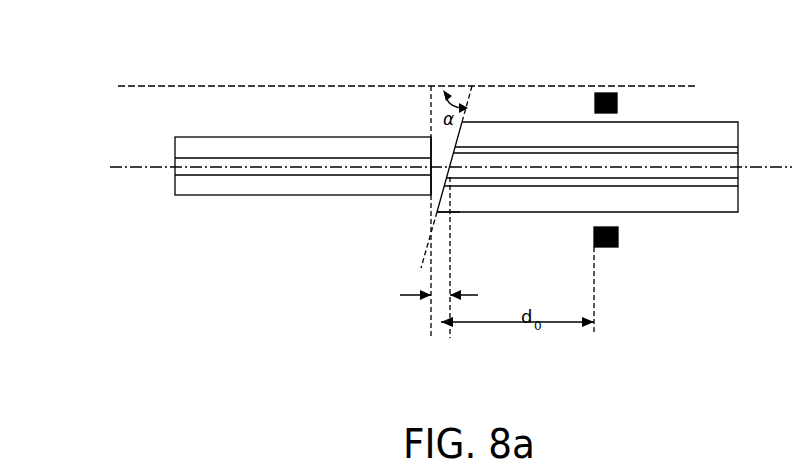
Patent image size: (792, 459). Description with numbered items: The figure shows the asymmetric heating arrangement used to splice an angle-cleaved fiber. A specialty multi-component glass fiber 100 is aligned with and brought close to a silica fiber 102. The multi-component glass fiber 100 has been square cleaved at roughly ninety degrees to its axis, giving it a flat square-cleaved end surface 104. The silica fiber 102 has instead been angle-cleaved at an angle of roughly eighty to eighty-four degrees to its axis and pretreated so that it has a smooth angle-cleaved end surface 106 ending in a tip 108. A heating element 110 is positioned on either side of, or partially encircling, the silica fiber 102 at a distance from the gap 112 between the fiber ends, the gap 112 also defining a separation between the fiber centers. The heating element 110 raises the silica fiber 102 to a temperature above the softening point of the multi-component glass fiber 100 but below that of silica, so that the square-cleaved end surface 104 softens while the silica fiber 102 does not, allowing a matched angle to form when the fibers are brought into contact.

The multi-component glass fiber 100 is at (245, 137).
The silica fiber 102 is at (545, 122).
The square-cleaved end surface 104 is at (432, 176).
The angle-cleaved end surface 106 is at (474, 128).
The tip 108 is at (440, 199).
The heating element 110 is at (617, 98).
The gap 112 is at (419, 300).